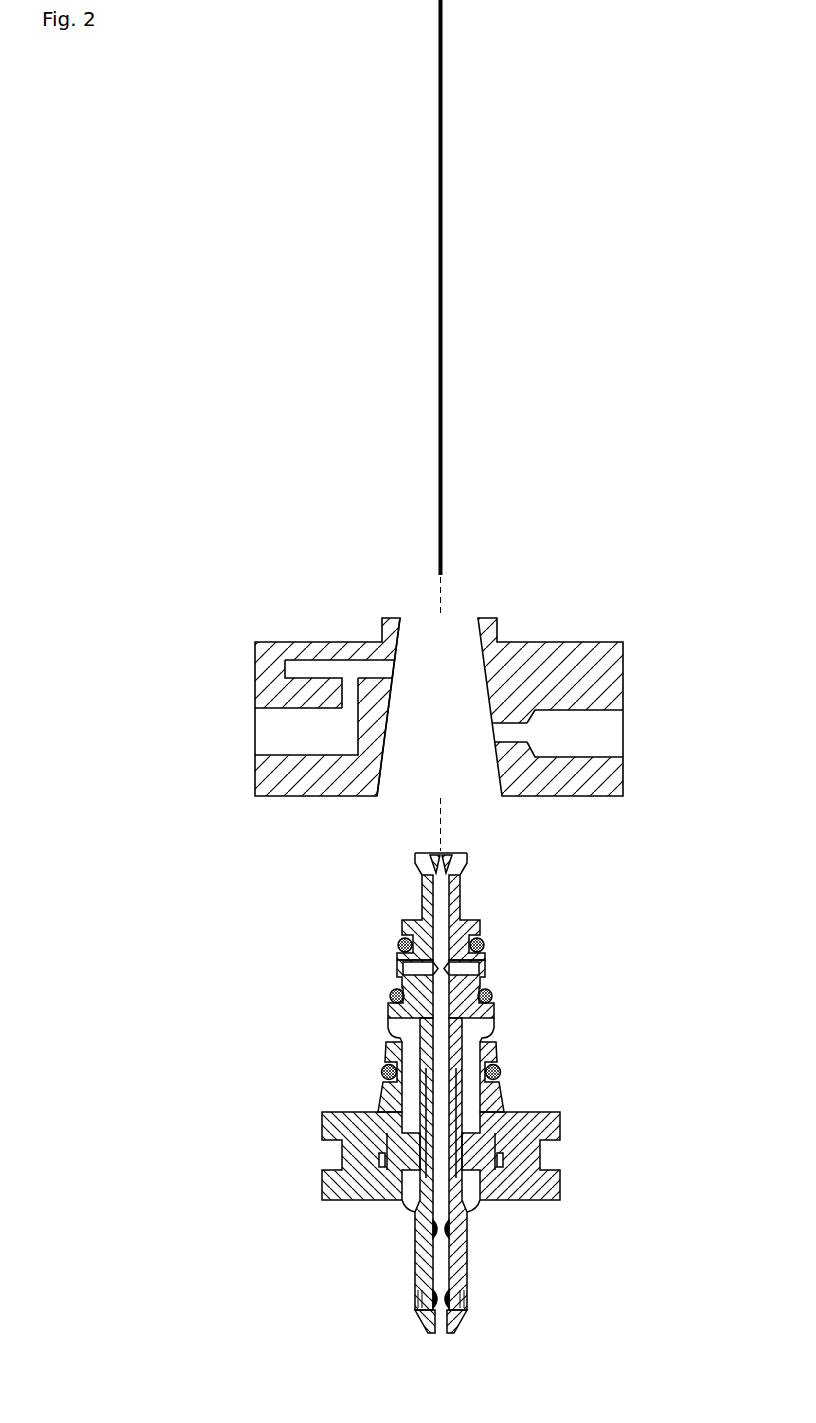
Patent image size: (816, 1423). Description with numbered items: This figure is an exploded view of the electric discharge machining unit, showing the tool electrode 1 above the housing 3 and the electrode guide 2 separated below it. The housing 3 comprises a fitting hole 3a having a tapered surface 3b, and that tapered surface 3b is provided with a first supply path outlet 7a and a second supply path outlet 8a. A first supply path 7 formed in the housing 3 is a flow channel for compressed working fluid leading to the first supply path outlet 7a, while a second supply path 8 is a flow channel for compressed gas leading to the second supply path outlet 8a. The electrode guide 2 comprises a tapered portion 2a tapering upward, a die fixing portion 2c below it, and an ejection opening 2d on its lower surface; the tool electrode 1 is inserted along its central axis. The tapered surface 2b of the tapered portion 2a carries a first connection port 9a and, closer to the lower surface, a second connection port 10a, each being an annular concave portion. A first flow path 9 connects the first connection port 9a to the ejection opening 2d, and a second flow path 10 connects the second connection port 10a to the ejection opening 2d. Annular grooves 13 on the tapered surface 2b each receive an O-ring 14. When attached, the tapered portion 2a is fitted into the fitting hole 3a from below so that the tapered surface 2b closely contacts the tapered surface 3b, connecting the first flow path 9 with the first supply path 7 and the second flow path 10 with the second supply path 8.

The tool electrode 1 is at (440, 192).
The electrode guide 2 is at (484, 1108).
The tapered portion 2a is at (490, 973).
The tapered surface 2b is at (480, 928).
The die fixing portion 2c is at (484, 1121).
The ejection opening 2d is at (442, 1333).
The housing 3 is at (468, 716).
The fitting hole 3a is at (453, 786).
The tapered surface 3b is at (388, 706).
The first supply path 7 is at (300, 748).
The first supply path outlet 7a is at (397, 672).
The second supply path 8 is at (586, 746).
The second supply path outlet 8a is at (493, 727).
The first flow path 9 is at (402, 974).
The first connection port 9a is at (392, 947).
The second flow path 10 is at (495, 1052).
The second connection port 10a is at (498, 997).
The annular groove 13 is at (372, 1060).
The O-ring 14 is at (381, 1072).